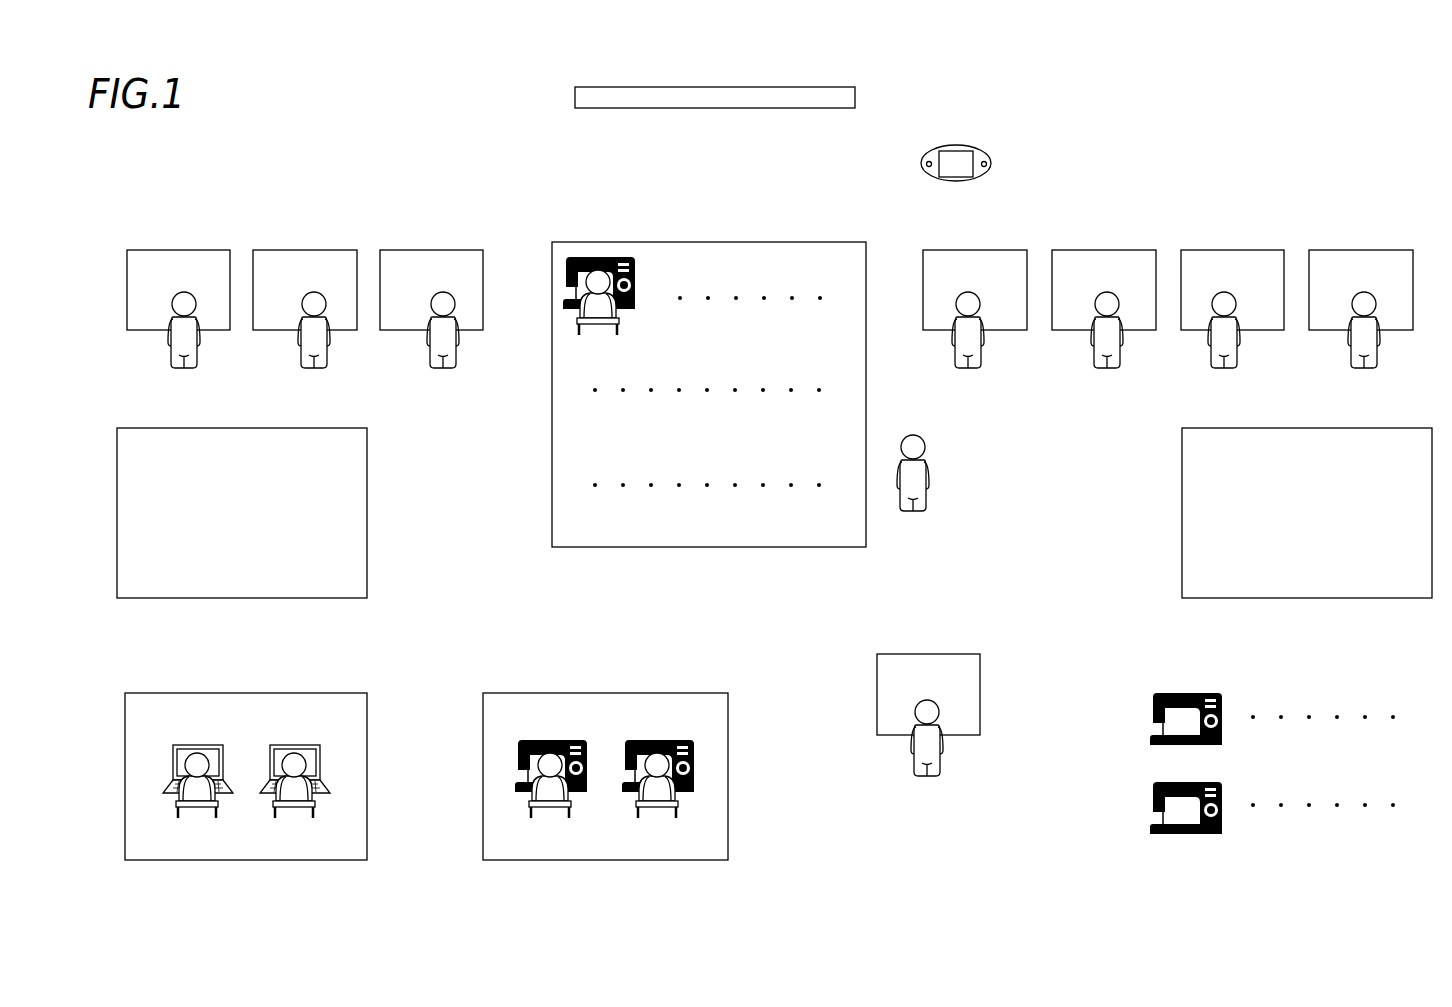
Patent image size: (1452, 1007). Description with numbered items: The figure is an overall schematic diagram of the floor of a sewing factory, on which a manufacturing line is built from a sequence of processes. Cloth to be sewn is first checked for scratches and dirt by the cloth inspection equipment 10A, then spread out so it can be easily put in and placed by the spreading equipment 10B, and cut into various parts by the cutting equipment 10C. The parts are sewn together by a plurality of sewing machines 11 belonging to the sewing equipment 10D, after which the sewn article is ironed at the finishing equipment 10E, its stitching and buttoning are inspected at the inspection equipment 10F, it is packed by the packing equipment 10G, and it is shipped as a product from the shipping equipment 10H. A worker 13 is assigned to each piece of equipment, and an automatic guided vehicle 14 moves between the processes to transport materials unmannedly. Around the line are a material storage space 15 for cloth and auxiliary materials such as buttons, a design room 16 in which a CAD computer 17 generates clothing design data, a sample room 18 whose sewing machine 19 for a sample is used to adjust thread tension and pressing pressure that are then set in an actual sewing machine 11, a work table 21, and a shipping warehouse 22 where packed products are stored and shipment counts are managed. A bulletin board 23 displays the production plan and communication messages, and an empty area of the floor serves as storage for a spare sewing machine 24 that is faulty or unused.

The cloth inspection equipment 10A is at (233, 274).
The spreading equipment 10B is at (357, 274).
The cutting equipment 10C is at (483, 274).
The sewing equipment 10D is at (717, 369).
The finishing equipment 10E is at (1027, 274).
The inspection equipment 10F is at (1156, 274).
The packing equipment 10G is at (1284, 274).
The shipping equipment 10H is at (1413, 274).
The sewing machine 11 is at (605, 257).
The worker 13 is at (916, 433).
The automatic guided vehicle (AGV) 14 is at (975, 146).
The material storage space 15 is at (336, 428).
The design room 16 is at (254, 750).
The CAD computer 17 is at (312, 745).
The sample room 18 is at (614, 750).
The sewing machine for a sample 19 is at (675, 740).
The work table 21 is at (950, 654).
The shipping warehouse 22 is at (1395, 428).
The bulletin board 23 is at (816, 86).
The spare sewing machine 24 is at (1196, 693).